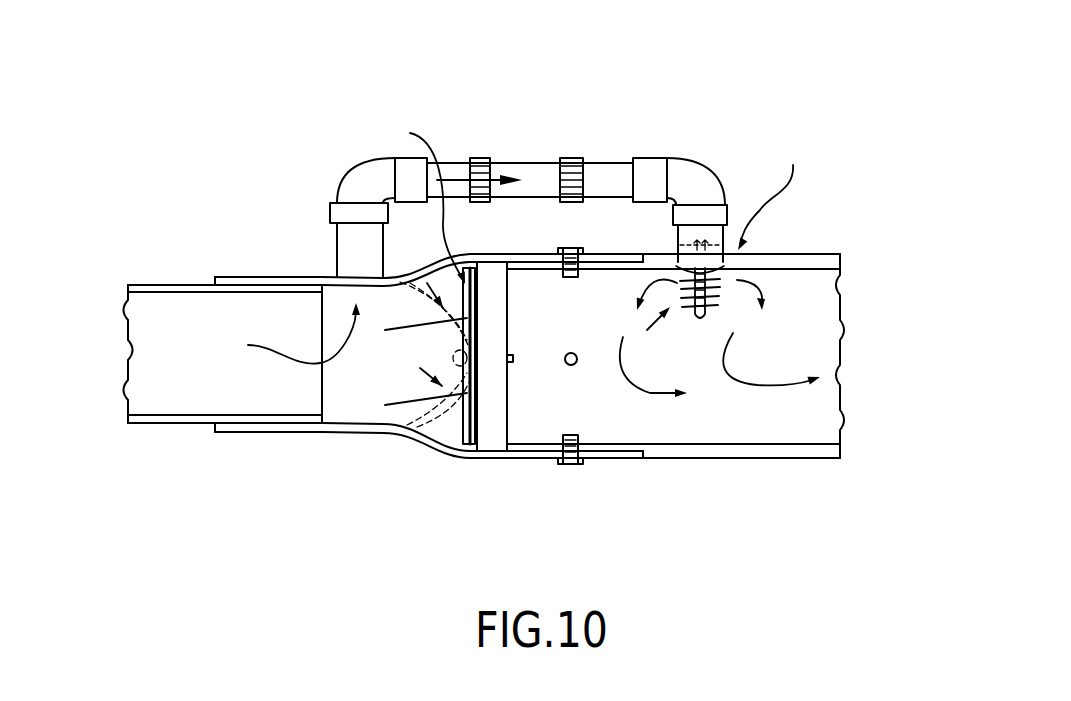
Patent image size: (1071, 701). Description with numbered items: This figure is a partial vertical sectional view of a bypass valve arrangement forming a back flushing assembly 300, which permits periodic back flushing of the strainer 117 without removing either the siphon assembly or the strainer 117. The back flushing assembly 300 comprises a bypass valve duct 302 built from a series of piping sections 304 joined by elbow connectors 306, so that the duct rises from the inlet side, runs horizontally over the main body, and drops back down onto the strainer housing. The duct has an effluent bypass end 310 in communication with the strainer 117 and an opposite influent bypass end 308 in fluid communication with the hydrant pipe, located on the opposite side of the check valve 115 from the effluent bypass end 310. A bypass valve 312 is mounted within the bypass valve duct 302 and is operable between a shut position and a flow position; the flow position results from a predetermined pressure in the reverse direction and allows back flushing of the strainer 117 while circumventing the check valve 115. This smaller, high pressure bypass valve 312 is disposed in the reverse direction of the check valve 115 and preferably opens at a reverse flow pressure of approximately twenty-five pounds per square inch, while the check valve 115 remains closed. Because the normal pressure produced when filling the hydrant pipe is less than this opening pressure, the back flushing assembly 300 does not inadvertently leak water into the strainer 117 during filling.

The back flushing assembly 300 is at (505, 105).
The bypass valve duct 302 is at (500, 180).
The piping sections 304 is at (540, 170).
The elbow connectors 306 is at (680, 168).
The influent bypass end 308 is at (372, 288).
The effluent bypass end 310 is at (697, 273).
The bypass valve 312 is at (720, 338).
The check valve 115 is at (350, 453).
The strainer 117 is at (780, 446).